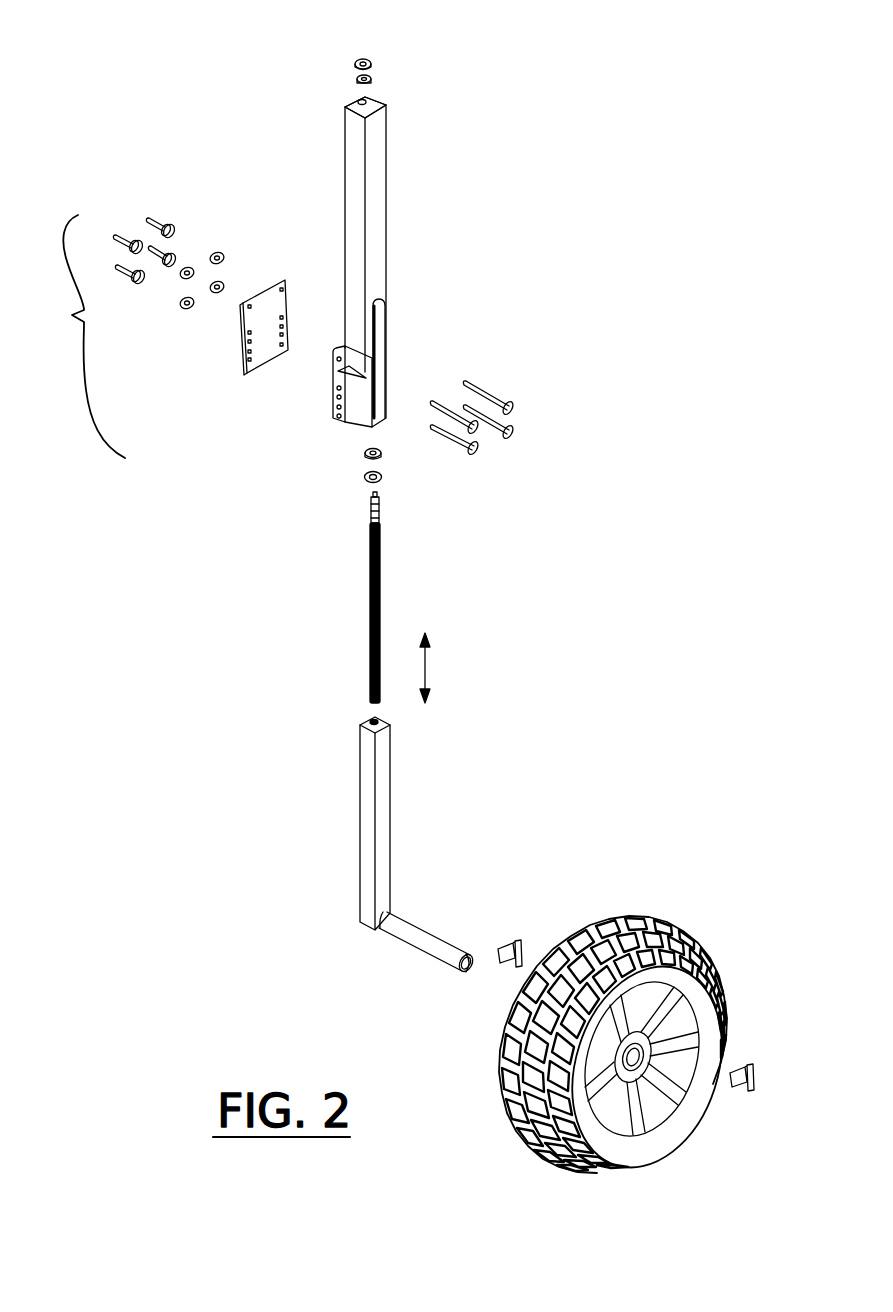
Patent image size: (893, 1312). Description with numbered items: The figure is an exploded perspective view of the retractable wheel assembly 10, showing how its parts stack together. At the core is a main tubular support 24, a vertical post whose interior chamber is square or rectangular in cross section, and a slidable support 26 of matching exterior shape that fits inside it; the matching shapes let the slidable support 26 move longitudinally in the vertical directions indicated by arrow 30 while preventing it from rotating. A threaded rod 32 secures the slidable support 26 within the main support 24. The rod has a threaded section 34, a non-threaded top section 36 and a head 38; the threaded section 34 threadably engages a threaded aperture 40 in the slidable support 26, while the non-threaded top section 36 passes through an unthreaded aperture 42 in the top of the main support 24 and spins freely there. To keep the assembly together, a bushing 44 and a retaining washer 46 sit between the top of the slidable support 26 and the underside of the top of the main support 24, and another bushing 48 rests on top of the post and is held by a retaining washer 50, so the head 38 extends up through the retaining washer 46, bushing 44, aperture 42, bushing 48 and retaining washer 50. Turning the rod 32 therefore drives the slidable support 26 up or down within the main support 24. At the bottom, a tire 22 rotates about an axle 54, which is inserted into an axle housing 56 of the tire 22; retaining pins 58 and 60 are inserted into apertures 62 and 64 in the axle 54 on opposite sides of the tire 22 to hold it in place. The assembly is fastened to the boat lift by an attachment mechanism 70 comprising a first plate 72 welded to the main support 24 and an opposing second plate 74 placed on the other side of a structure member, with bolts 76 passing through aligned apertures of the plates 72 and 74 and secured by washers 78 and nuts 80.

The retractable wheel assembly 10 is at (515, 589).
The tire 22 is at (622, 1038).
The main tubular support 24 is at (392, 257).
The slidable support 26 is at (384, 809).
The arrow 30 is at (427, 678).
The threaded rod 32 is at (379, 578).
The threaded section 34 is at (368, 590).
The non-threaded top section 36 is at (348, 503).
The head 38 is at (367, 494).
The threaded aperture 40 is at (372, 716).
The aperture 42 is at (380, 100).
The bushing 44 is at (365, 449).
The retaining washer 46 is at (383, 474).
The bushing 48 is at (357, 80).
The retaining washer 50 is at (370, 62).
The axle 54 is at (410, 949).
The axle housing 56 is at (653, 1082).
The retaining pin 58 is at (508, 937).
The retaining pin 60 is at (753, 1067).
The aperture 62 is at (388, 930).
The aperture 64 is at (443, 962).
The attachment mechanism 70 is at (83, 336).
The first plate 72 is at (332, 403).
The second plate 74 is at (245, 337).
The bolts 76 is at (496, 368).
The washers 78 is at (242, 252).
The nuts 80 is at (155, 205).